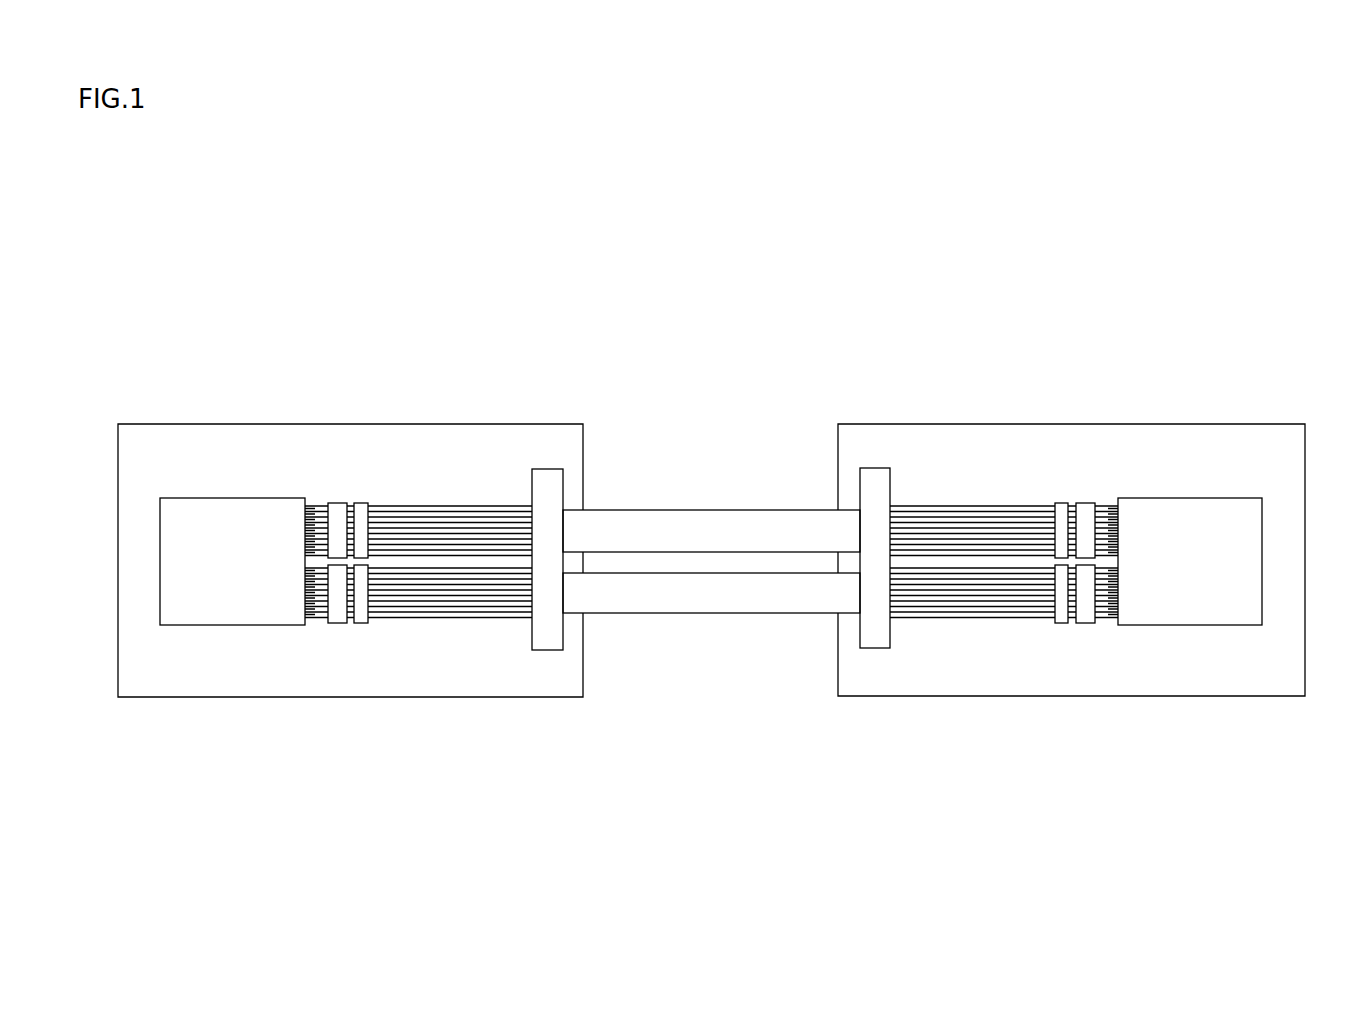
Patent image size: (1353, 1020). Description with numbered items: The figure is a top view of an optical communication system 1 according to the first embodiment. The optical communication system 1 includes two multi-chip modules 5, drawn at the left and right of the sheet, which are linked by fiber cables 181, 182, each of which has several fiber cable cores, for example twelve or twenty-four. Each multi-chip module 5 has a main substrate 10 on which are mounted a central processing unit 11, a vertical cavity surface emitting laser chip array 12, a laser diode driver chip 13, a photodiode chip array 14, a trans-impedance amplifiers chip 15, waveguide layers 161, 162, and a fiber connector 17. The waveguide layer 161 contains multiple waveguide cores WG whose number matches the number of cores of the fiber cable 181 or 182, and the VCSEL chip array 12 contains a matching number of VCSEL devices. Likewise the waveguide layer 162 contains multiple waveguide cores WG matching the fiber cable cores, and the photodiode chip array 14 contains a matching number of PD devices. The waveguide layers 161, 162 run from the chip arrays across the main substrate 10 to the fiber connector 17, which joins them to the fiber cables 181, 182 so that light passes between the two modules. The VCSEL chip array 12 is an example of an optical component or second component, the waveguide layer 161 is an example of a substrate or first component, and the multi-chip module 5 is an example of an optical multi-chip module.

The optical communication system 1 is at (1118, 288).
The multi-chip module 5 is at (568, 340).
The main substrate 10 is at (153, 424).
The central processing unit 11 is at (235, 498).
The vertical cavity surface emitting laser chip array 12 is at (362, 623).
The laser diode driver chip 13 is at (337, 623).
The photodiode chip array 14 is at (362, 503).
The trans-impedance amplifiers chip 15 is at (338, 503).
The waveguide layer 161 is at (442, 640).
The waveguide layer 162 is at (443, 478).
The fiber connector 17 is at (546, 469).
The fiber cable 181 is at (705, 510).
The fiber cable 182 is at (705, 613).
The waveguide core WG is at (711, 561).